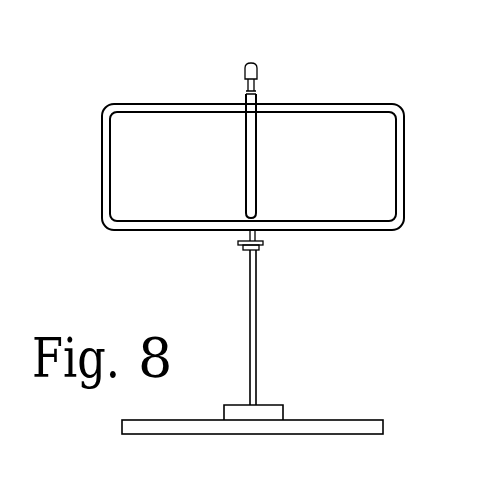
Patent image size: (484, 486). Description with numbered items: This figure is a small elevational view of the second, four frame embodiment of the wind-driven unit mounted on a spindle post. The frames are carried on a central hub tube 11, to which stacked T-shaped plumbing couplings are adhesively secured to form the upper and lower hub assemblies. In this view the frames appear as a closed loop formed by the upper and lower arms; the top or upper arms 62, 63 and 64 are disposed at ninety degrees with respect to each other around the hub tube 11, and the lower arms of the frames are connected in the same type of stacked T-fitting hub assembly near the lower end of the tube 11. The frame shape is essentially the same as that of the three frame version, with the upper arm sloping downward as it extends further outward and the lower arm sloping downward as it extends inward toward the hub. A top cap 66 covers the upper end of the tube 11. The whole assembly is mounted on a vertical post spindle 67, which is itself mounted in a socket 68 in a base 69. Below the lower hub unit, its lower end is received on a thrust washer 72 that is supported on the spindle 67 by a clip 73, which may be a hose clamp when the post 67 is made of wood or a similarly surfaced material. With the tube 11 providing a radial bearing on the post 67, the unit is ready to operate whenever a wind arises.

The hub tube 11 is at (257, 170).
The upper arm 62 is at (257, 130).
The upper arm 63 is at (352, 103).
The upper arm 64 is at (158, 104).
The top cap 66 is at (258, 65).
The vertical post spindle 67 is at (257, 322).
The socket 68 is at (284, 409).
The base 69 is at (368, 419).
The thrust washer 72 is at (264, 242).
The clip 73 is at (242, 250).